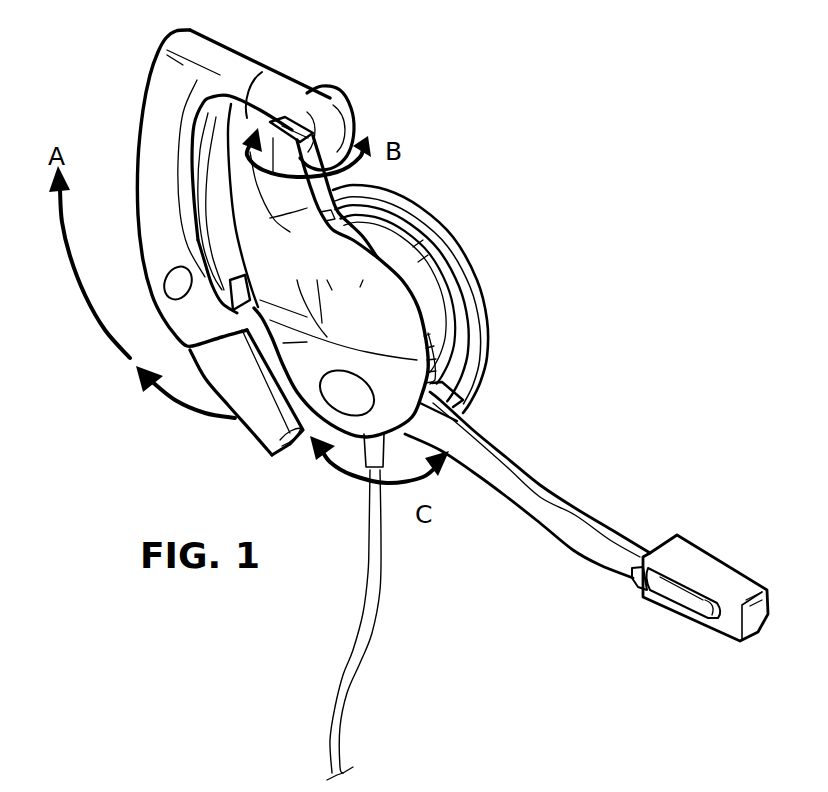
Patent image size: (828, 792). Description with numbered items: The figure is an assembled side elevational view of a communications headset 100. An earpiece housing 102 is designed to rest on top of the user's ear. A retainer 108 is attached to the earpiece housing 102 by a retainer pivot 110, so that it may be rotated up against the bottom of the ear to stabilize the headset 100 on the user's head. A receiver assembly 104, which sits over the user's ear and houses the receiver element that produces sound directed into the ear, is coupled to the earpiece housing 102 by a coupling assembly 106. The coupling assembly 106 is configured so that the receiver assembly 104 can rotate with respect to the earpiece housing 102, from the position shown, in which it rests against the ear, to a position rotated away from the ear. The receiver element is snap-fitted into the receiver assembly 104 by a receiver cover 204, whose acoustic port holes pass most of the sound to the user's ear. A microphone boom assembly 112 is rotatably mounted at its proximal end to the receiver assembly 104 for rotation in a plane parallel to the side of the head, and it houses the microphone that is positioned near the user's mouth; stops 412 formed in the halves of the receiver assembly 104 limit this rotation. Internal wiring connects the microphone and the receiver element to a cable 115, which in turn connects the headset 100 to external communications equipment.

The communications headset 100 is at (580, 222).
The earpiece housing 102 is at (237, 66).
The receiver assembly 104 is at (358, 287).
The coupling assembly 106 is at (347, 123).
The retainer 108 is at (284, 428).
The retainer pivot 110 is at (178, 284).
The microphone boom assembly 112 is at (576, 569).
The cable 115 is at (345, 667).
The receiver cover 204 is at (478, 342).
The stops 412 is at (468, 403).